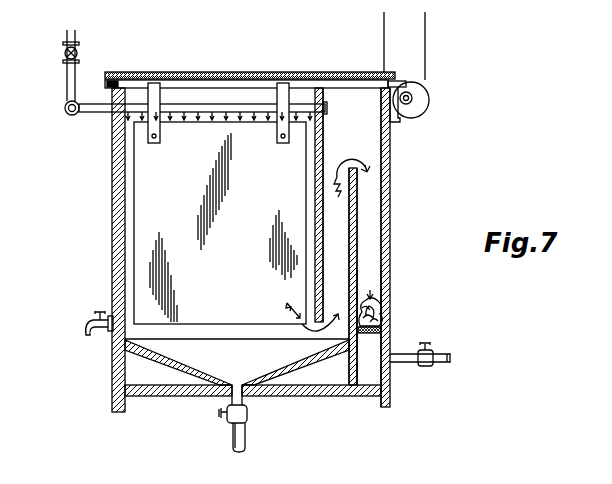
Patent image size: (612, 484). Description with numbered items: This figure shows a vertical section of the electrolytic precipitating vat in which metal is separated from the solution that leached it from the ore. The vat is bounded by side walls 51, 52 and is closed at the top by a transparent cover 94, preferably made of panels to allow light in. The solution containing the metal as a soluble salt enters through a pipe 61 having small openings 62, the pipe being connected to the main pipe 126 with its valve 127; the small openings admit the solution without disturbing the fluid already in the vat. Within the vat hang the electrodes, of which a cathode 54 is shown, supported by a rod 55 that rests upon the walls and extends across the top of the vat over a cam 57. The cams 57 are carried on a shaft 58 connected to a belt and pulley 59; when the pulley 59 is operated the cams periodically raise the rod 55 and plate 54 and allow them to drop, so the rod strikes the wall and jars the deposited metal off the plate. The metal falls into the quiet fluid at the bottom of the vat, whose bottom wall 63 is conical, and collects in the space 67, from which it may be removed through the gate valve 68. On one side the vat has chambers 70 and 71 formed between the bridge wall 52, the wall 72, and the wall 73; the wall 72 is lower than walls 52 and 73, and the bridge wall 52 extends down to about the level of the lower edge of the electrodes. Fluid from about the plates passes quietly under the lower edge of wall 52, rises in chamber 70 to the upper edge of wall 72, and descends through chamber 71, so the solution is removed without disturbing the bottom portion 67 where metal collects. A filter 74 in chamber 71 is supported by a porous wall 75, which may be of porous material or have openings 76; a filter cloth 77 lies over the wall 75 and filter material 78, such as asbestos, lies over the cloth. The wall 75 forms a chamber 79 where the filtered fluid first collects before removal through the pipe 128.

The side wall 51 is at (112, 246).
The bridge wall 52 is at (322, 160).
The cathode 54 is at (236, 226).
The rod 55 is at (334, 82).
The cam 57 is at (412, 92).
The shaft 58 is at (412, 103).
The pulley 59 is at (425, 50).
The pipe 61 is at (222, 106).
The opening 62 is at (235, 115).
The bottom wall 63 is at (303, 370).
The space 67 is at (237, 362).
The gate valve 68 is at (225, 420).
The chamber 70 is at (338, 236).
The chamber 71 is at (371, 247).
The wall 72 is at (349, 216).
The wall 73 is at (390, 216).
The filter 74 is at (370, 288).
The porous wall 75 is at (385, 330).
The opening 76 is at (371, 345).
The filter cloth 77 is at (385, 319).
The filter material 78 is at (391, 284).
The chamber 79 is at (371, 373).
The lid 94 is at (200, 72).
The main pipe 126 is at (80, 67).
The faucet 127 is at (77, 261).
The pipe 128 is at (410, 363).